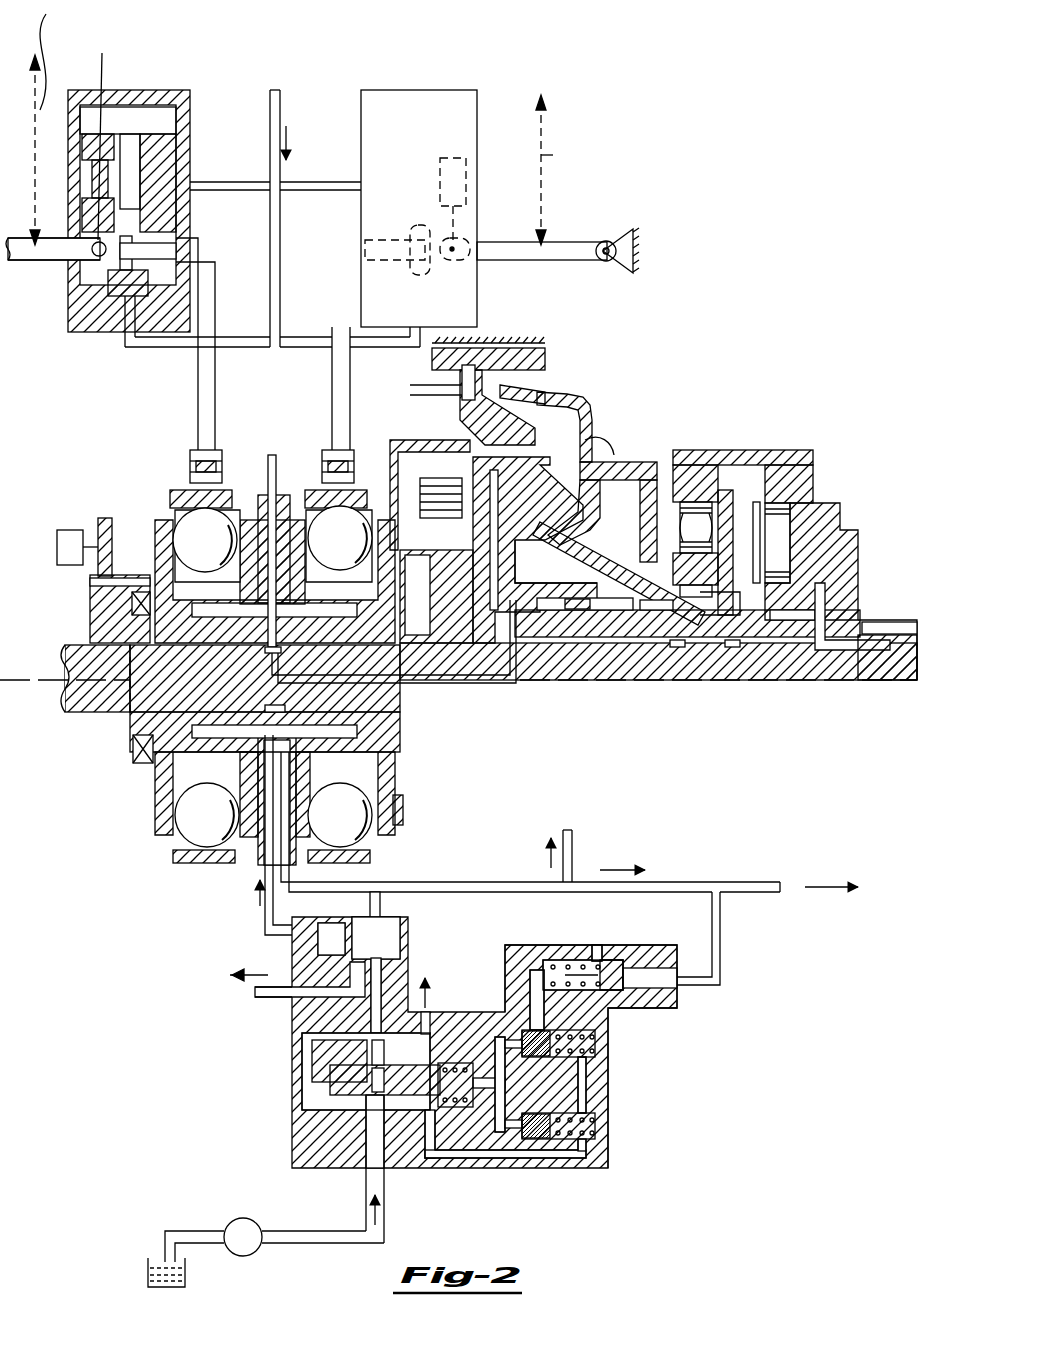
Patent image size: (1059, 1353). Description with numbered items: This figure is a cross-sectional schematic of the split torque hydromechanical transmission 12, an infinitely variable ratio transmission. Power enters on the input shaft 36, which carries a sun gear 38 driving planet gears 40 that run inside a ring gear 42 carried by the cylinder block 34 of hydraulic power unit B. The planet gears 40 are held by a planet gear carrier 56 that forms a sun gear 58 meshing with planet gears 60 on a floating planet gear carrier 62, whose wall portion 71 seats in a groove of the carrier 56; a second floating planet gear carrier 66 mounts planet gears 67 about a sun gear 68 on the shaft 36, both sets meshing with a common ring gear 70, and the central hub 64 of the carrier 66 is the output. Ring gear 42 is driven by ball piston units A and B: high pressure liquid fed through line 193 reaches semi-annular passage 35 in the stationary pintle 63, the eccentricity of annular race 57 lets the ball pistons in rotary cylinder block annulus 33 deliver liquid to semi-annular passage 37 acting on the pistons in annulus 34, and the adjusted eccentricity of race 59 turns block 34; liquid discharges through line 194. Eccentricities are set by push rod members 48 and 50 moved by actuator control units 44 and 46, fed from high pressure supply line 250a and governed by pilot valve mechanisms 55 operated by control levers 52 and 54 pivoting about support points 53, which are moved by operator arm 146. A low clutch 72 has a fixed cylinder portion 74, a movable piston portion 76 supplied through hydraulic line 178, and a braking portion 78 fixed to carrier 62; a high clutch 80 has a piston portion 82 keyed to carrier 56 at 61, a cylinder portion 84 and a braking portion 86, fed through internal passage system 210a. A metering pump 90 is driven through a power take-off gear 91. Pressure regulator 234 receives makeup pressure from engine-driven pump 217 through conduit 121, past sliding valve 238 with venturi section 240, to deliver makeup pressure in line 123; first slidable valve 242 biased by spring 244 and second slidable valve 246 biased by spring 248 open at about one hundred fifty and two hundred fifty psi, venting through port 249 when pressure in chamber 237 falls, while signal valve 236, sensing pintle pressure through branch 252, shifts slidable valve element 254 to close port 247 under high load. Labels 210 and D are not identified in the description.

The transmission 12 is at (758, 360).
The rotary cylinder block annulus 33 is at (160, 797).
The cylinder block 34 is at (286, 576).
The semi-annular passage 35 is at (262, 703).
The input shaft 36 is at (624, 680).
The semi-annular passage 37 is at (215, 627).
The sun gear 38 is at (436, 628).
The planet gears 40 is at (398, 447).
The ring gear 42 is at (418, 422).
The actuator control unit 44 is at (182, 88).
The actuator control unit 46 is at (472, 90).
The push rod member 48 is at (197, 403).
The push rod member 50 is at (332, 385).
The control lever 52 is at (50, 264).
The pivot support points 53 is at (604, 241).
The control lever 54 is at (548, 261).
The pilot valve mechanism 55 is at (506, 152).
The planet gear carrier 56 is at (482, 578).
The annular race 57 is at (185, 493).
The sun gear 58 is at (735, 630).
The race 59 is at (300, 495).
The planet gears 60 is at (704, 465).
The keyed connection 61 is at (578, 625).
The floating planet gear carrier 62 is at (655, 462).
The stationary pintle 63 is at (176, 648).
The central hub 64 is at (900, 695).
The floating planet gear carrier 66 is at (835, 522).
The planet gears 67 is at (808, 480).
The sun gear 68 is at (815, 652).
The common ring gear 70 is at (753, 450).
The wall portion 71 is at (722, 600).
The low clutch 72 is at (547, 356).
The fixed cylinder portion 74 is at (508, 345).
The movable piston portion 76 is at (560, 408).
The braking portion 78 is at (545, 396).
The high clutch 80 is at (512, 580).
The movable piston portion 82 is at (580, 497).
The cylinder portion 84 is at (592, 443).
The braking portion 86 is at (594, 528).
The metering pump 90 is at (64, 530).
The power take-off gear 91 is at (115, 577).
The conduit 121 is at (362, 1178).
The makeup pressure line 123 is at (262, 998).
The operator arm 146 is at (375, 122).
The hydraulic line 178 is at (415, 383).
The line 193 is at (265, 935).
The conduit 194 is at (458, 880).
The pin 210 is at (268, 458).
The internal passage system 210a is at (480, 690).
The engine-driven pump 217 is at (255, 1255).
The pressure regulator 234 is at (635, 1112).
The signal valve 236 is at (655, 1012).
The chamber 237 is at (458, 1098).
The sliding valve 238 is at (335, 1090).
The venturi section 240 is at (290, 1138).
The first slidable valve 242 is at (597, 1045).
The spring 244 is at (600, 1065).
The second slidable valve 246 is at (597, 1125).
The port 247 is at (552, 955).
The spring 248 is at (590, 1160).
The port 249 is at (437, 1005).
The high pressure supply line 250a is at (280, 97).
The branch 252 is at (725, 930).
The slidable valve element 254 is at (612, 952).
The hydraulic power unit A is at (195, 530).
The hydraulic power unit B is at (352, 552).
The drain D is at (597, 925).